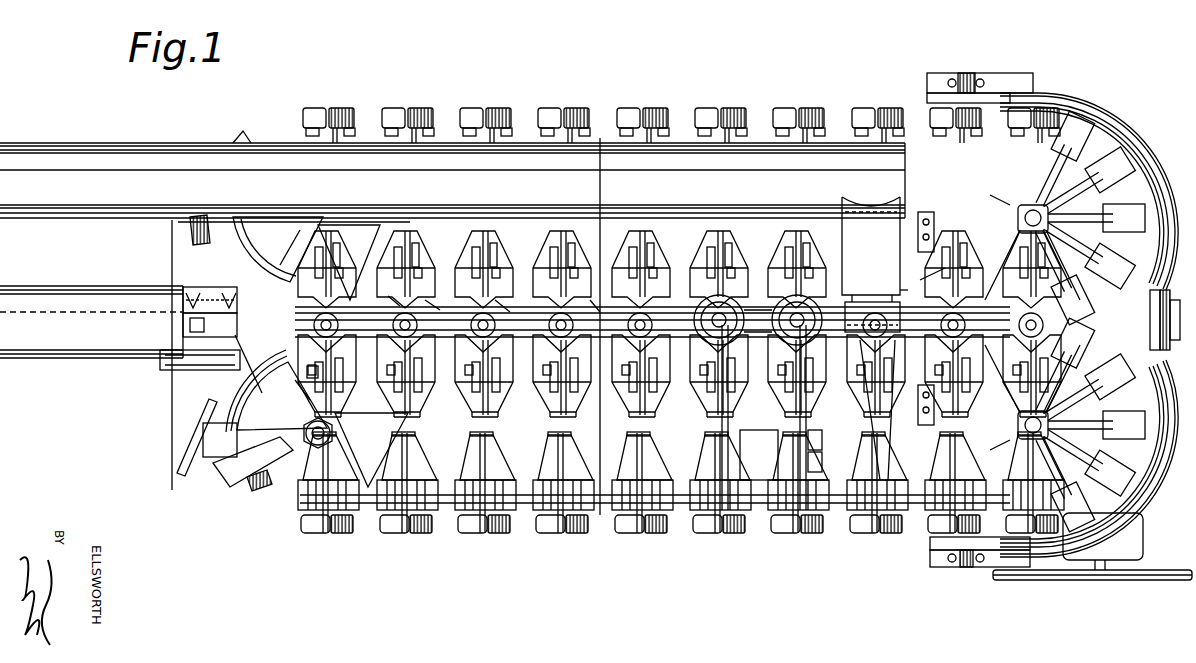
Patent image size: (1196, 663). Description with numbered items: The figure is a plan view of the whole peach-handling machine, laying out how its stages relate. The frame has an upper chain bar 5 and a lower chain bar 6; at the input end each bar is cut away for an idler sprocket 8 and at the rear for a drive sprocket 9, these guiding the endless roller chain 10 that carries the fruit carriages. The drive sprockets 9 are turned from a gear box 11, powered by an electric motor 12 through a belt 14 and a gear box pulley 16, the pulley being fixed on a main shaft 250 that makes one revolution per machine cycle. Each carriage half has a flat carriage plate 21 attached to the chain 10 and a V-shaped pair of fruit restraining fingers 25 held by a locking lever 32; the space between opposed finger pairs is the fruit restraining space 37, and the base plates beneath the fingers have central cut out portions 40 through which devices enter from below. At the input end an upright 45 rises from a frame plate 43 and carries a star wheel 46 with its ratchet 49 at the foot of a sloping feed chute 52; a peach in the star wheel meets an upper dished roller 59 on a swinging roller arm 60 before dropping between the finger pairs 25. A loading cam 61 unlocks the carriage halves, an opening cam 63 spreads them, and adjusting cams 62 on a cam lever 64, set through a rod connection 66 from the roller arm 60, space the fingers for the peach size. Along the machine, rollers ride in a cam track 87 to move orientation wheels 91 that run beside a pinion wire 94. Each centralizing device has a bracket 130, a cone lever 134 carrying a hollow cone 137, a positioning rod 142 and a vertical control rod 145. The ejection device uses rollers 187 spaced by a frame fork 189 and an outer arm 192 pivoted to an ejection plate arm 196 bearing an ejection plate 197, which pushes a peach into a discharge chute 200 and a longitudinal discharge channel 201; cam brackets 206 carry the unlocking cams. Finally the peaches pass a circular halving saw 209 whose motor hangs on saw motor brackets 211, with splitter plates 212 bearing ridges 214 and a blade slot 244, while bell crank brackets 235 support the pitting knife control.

The upper chain bar 5 is at (805, 420).
The lower chain bar 6 is at (745, 492).
The idler sprocket 8 is at (363, 355).
The drive sprocket 9 is at (988, 320).
The endless roller chain 10 is at (747, 290).
The gear box 11 is at (1152, 300).
The electric motor 12 is at (1130, 540).
The belt 14 is at (1140, 580).
The gear box pulley 16 is at (965, 568).
The carriage plate 21 is at (800, 533).
The fruit restraining fingers 25 is at (690, 535).
The locking lever 32 is at (612, 390).
The fruit restraining space 37 is at (710, 270).
The central cut out portions 40 is at (652, 322).
The frame plate 43 is at (178, 430).
The upright 45 is at (180, 362).
The star wheel 46 is at (205, 286).
The ratchet 49 is at (205, 372).
The sloping feed chute 52 is at (91, 322).
The upper dished roller 59 is at (286, 248).
The swinging roller arm 60 is at (313, 398).
The loading cam 61 is at (276, 324).
The adjusting cam 62 is at (395, 300).
The opening cam 63 is at (180, 455).
The cam lever 64 is at (288, 388).
The rod connection 66 is at (235, 335).
The cam track 87 is at (527, 318).
The orientation wheel 91 is at (595, 300).
The pinion wire 94 is at (430, 300).
The bracket 130 is at (756, 432).
The cone lever 134 is at (728, 400).
The hollow cone 137 is at (800, 300).
The positioning rod 142 is at (812, 436).
The vertical control rod 145 is at (812, 460).
The rollers 187 is at (945, 268).
The frame fork 189 is at (936, 398).
The outer arm 192 is at (893, 430).
The ejection plate arm 196 is at (902, 300).
The ejection plate 197 is at (877, 316).
The discharge chute 200 is at (874, 246).
The longitudinal discharge channel 201 is at (452, 180).
The cam brackets 206 is at (936, 410).
The circular halving saw 209 is at (1150, 346).
The saw motor brackets 211 is at (1155, 255).
The splitter plate 212 is at (1165, 322).
The ridges 214 is at (1058, 532).
The bell crank bracket 235 is at (965, 567).
The blade slot 244 is at (935, 540).
The main shaft 250 is at (1100, 572).